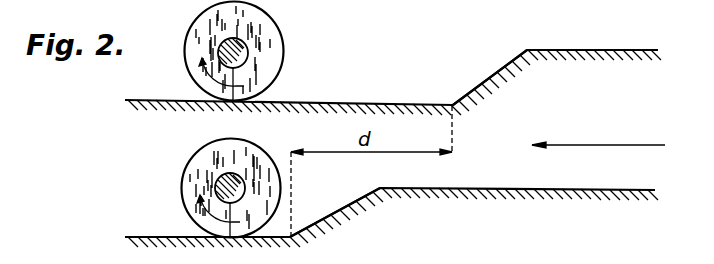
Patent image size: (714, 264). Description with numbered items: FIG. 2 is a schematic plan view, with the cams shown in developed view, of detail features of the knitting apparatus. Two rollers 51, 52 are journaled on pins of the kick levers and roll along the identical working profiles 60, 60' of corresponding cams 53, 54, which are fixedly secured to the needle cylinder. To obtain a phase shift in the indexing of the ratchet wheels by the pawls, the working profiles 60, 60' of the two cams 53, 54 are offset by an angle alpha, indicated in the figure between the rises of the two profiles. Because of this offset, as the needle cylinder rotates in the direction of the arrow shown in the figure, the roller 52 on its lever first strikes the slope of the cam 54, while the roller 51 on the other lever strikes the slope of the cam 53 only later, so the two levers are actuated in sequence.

The roller 51 is at (192, 42).
The roller 52 is at (191, 193).
The cam 53 is at (565, 49).
The cam 54 is at (556, 189).
The working profile 60 is at (335, 210).
The working profile 60' is at (490, 73).